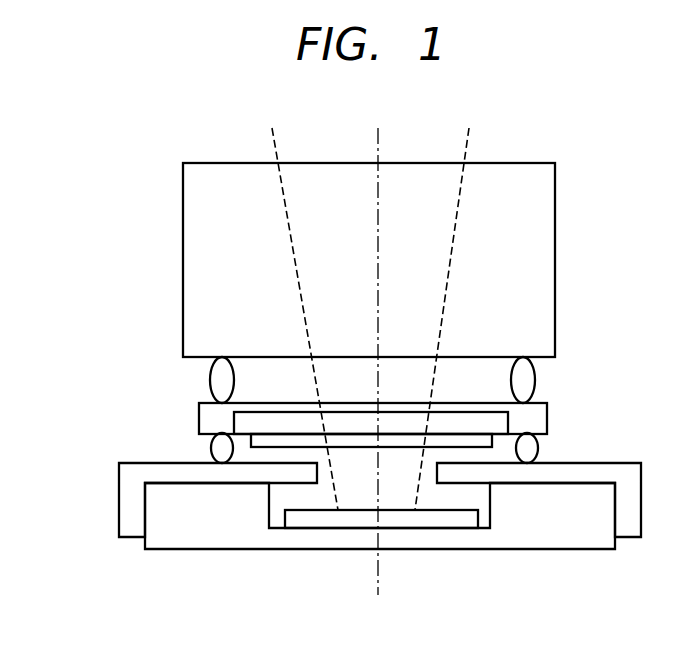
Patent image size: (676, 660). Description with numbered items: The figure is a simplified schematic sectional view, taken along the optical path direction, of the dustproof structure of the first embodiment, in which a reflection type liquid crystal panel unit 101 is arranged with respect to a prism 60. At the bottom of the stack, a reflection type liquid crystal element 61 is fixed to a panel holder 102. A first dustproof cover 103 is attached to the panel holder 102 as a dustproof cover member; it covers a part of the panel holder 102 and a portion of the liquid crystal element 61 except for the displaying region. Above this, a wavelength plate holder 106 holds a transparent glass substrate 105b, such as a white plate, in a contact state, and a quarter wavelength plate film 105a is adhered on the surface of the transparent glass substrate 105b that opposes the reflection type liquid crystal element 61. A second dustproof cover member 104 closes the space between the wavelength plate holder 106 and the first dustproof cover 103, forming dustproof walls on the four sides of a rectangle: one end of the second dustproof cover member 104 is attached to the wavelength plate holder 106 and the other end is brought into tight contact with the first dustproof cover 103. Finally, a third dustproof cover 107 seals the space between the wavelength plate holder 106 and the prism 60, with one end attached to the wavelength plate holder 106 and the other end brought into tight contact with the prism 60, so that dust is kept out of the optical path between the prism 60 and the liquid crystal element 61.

The prism 60 is at (540, 203).
The reflection type liquid crystal element 61 is at (443, 530).
The reflection type liquid crystal panel unit 101 is at (287, 221).
The panel holder 102 is at (223, 527).
The first dustproof cover 103 is at (133, 508).
The second dustproof cover member 104 is at (223, 448).
The quarter wavelength plate film 105a is at (477, 448).
The transparent glass substrate 105b is at (290, 412).
The wavelength plate holder 106 is at (538, 418).
The third dustproof cover 107 is at (525, 373).